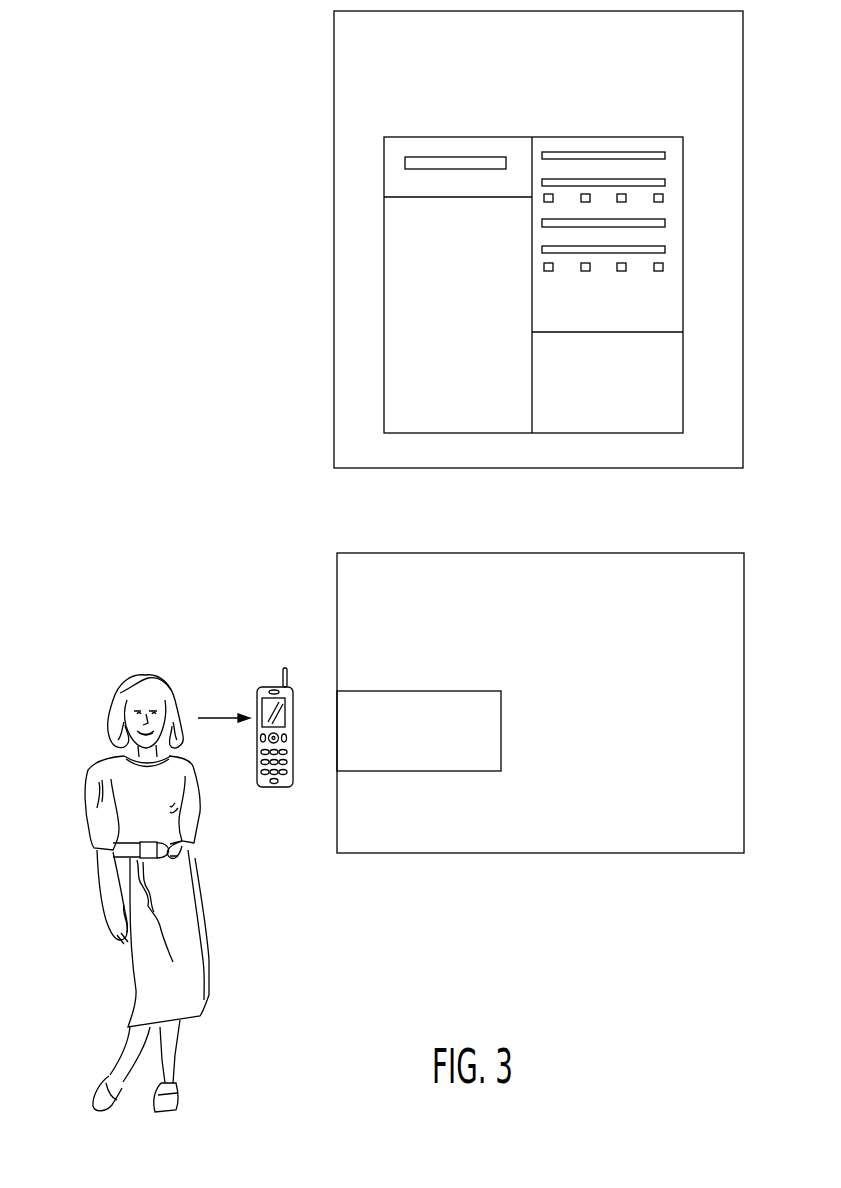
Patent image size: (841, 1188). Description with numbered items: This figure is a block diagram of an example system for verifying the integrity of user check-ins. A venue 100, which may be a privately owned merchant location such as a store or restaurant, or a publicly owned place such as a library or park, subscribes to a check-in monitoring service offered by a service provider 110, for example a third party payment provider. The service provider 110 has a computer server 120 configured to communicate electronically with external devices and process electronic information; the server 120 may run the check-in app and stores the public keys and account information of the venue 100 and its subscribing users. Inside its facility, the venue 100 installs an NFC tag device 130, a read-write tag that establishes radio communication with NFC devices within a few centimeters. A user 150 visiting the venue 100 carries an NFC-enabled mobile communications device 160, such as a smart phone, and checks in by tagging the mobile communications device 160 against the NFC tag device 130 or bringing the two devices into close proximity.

The venue 100 is at (744, 826).
The service provider 110 is at (743, 435).
The computer server 120 is at (647, 407).
The NFC tag device 130 is at (470, 761).
The user 150 is at (93, 659).
The NFC-enabled mobile communications device 160 is at (274, 788).